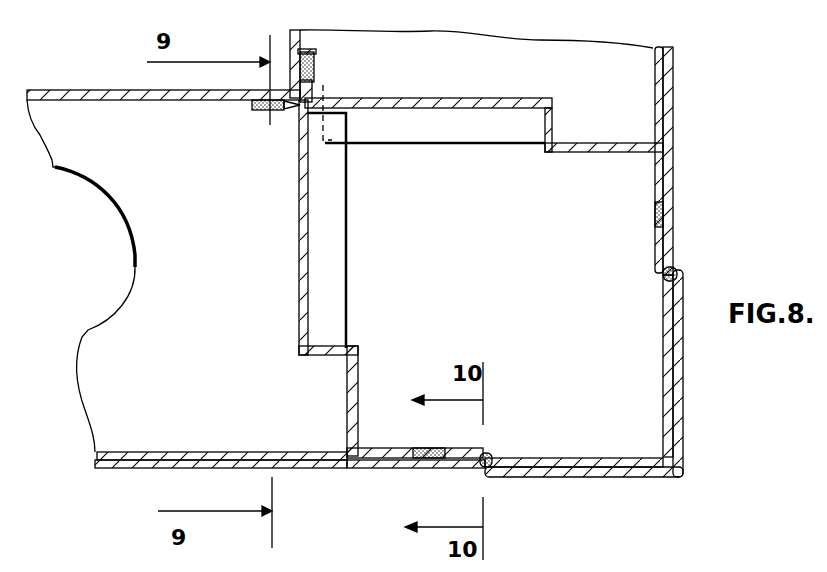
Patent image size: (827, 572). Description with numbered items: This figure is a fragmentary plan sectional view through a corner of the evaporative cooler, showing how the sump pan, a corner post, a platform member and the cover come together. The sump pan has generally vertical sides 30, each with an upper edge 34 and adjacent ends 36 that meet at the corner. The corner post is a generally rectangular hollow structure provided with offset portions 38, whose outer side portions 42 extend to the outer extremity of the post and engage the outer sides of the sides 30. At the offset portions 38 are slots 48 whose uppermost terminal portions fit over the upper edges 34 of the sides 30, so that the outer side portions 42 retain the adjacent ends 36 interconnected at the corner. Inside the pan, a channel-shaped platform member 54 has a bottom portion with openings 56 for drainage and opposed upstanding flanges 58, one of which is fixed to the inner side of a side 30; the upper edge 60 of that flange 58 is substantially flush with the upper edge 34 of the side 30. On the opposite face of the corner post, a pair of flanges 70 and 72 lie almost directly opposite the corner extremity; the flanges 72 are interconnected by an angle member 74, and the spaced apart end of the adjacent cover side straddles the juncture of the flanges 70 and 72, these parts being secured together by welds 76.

The sides of the sump pan 30 is at (676, 128).
The upper edges 34 is at (140, 470).
The adjacent ends 36 is at (663, 420).
The offset portions 38 is at (658, 275).
The outer side portions 42 is at (683, 396).
The slots 48 is at (488, 455).
The platform members 54 is at (182, 414).
The openings 56 is at (136, 272).
The upstanding flanges 58 is at (130, 90).
The upper edge 60 is at (200, 452).
The flange 70 is at (283, 118).
The flange 72 is at (314, 58).
The angle member 74 is at (316, 82).
The welds 76 is at (255, 103).